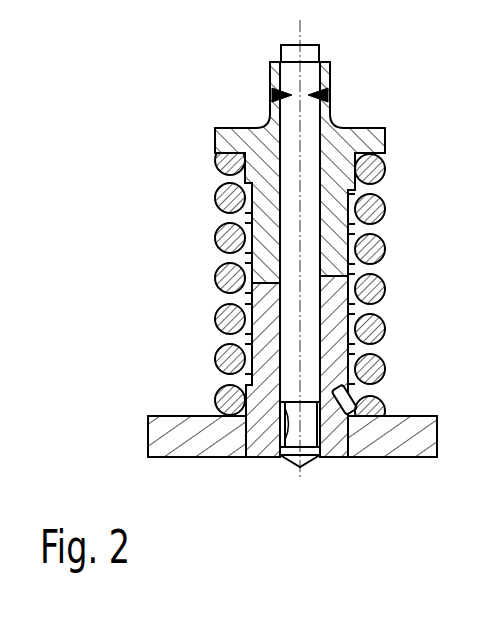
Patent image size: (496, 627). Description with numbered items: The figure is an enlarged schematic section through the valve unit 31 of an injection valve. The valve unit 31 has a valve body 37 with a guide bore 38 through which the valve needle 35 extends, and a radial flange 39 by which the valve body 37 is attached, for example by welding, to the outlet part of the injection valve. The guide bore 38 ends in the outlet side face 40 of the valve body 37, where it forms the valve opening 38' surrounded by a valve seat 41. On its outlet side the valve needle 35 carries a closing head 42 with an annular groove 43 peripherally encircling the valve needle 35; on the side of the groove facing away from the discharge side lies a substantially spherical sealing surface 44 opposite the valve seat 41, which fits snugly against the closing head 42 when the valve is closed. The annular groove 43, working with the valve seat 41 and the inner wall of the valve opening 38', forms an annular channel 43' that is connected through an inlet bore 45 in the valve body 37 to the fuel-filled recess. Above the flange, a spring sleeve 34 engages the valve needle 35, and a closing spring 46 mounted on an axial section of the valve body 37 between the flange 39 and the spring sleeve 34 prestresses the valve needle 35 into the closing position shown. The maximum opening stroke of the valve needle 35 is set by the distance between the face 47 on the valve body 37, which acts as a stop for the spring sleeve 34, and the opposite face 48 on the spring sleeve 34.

The valve unit 31 is at (186, 130).
The spring sleeve 34 is at (340, 150).
The valve needle 35 is at (302, 125).
The valve body 37 is at (276, 354).
The guide bore 38 is at (382, 339).
The valve opening 38' is at (267, 521).
The radial flange 39 is at (185, 436).
The outlet side face 40 is at (376, 465).
The valve seat 41 is at (322, 462).
The closing head 42 is at (295, 470).
The annular groove 43 is at (202, 413).
The annular channel 43' is at (234, 499).
The sealing surface 44 is at (277, 454).
The inlet bore 45 is at (357, 400).
The closing spring 46 is at (218, 233).
The face 47 is at (328, 279).
The face 48 is at (264, 297).